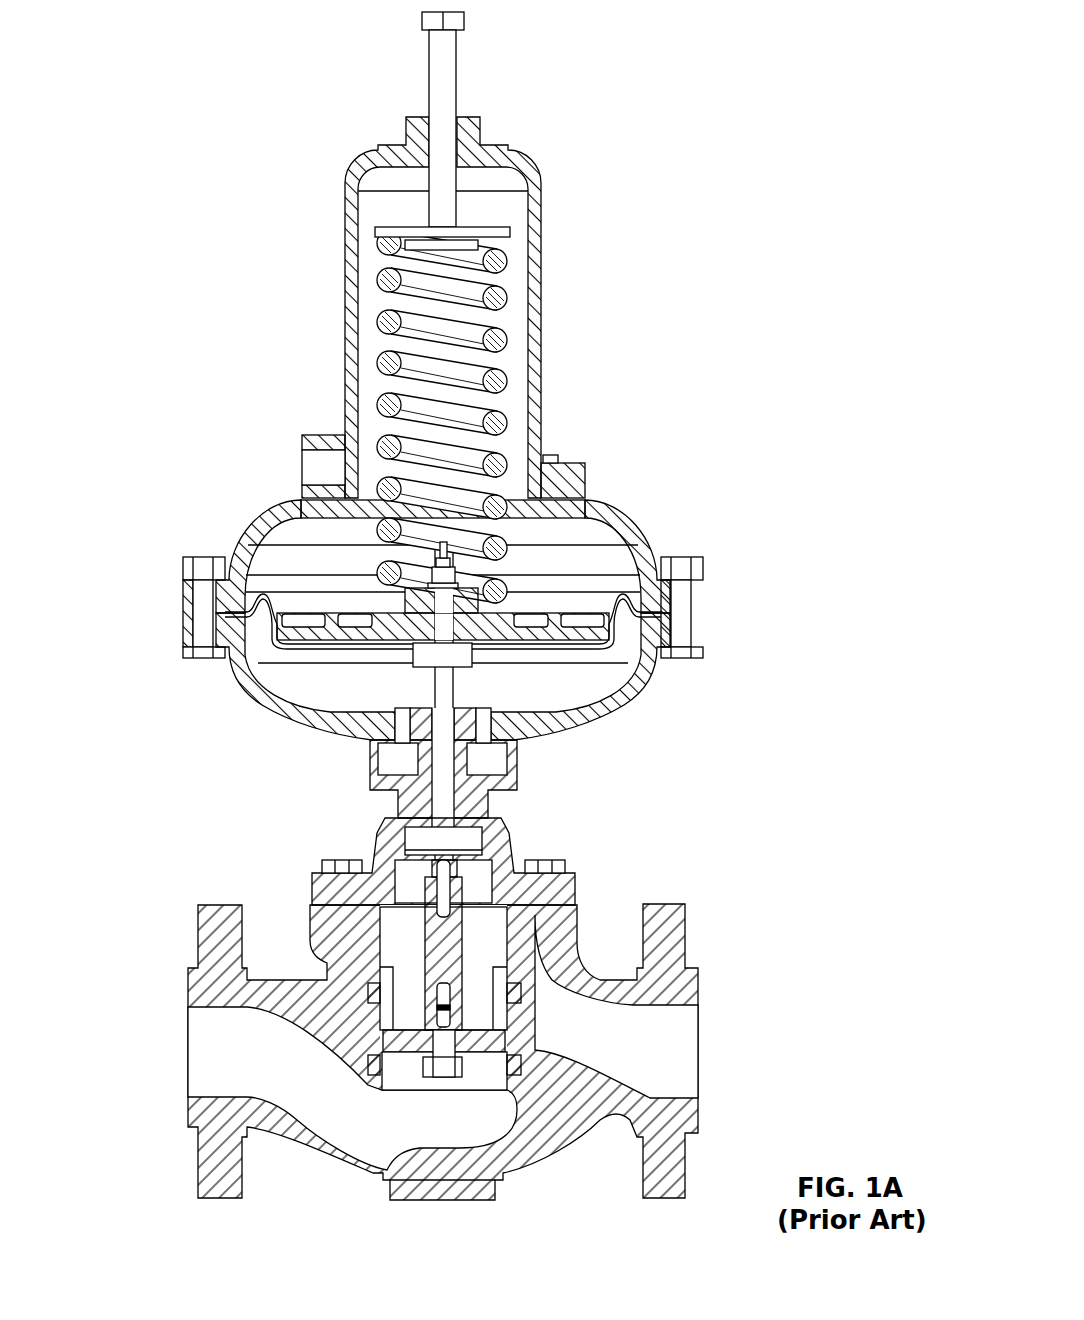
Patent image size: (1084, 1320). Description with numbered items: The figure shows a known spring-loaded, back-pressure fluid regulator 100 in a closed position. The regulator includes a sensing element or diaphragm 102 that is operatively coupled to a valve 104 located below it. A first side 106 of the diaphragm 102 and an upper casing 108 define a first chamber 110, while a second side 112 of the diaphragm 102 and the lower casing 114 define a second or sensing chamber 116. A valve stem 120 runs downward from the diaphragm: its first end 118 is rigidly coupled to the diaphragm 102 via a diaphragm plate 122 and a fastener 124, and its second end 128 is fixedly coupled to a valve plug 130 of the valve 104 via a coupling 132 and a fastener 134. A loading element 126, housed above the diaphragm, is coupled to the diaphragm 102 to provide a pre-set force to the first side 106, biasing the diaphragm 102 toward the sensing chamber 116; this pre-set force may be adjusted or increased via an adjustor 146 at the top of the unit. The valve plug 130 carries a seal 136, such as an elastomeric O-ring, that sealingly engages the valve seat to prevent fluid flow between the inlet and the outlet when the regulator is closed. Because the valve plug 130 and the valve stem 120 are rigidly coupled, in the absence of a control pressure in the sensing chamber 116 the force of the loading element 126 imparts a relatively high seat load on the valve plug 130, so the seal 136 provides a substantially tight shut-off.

The fluid regulator 100 is at (188, 40).
The diaphragm 102 is at (632, 557).
The valve 104 is at (737, 878).
The first side 106 is at (553, 592).
The upper casing 108 is at (600, 499).
The first chamber 110 is at (278, 540).
The second side 112 is at (297, 645).
The lower casing 114 is at (578, 720).
The sensing chamber 116 is at (340, 699).
The first end 118 is at (441, 619).
The valve stem 120 is at (443, 788).
The diaphragm plate 122 is at (583, 632).
The fastener 124 is at (430, 573).
The loading element 126 is at (498, 300).
The second end 128 is at (447, 860).
The valve plug 130 is at (478, 1003).
The coupling 132 is at (432, 957).
The fastener 134 is at (442, 1072).
The seal 136 is at (372, 1068).
The adjustor 146 is at (447, 76).